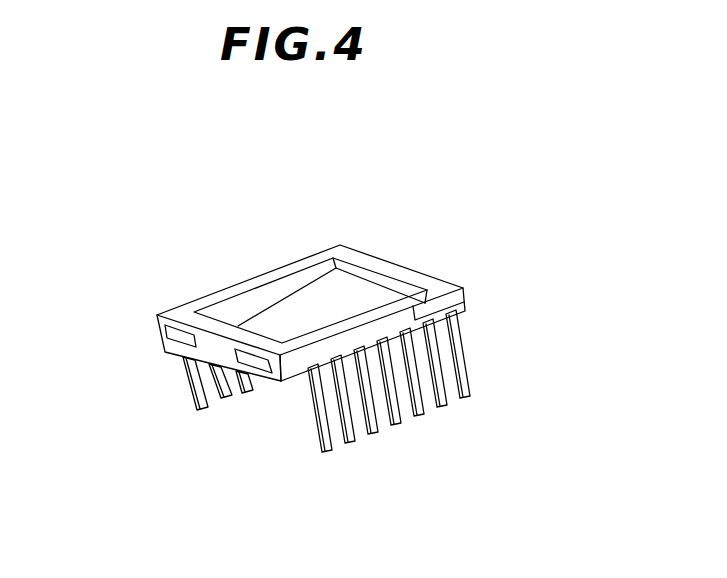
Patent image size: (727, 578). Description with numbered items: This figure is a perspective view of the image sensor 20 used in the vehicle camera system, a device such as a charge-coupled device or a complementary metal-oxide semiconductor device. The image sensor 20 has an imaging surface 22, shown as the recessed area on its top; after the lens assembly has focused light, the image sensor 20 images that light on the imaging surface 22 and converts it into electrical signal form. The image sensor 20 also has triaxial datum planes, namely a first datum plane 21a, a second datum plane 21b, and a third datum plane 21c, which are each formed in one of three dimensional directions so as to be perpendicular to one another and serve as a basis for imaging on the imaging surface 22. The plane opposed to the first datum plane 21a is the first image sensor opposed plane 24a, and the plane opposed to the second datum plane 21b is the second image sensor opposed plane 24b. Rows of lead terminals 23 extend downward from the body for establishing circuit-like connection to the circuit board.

The image sensor 20 is at (360, 262).
The first datum plane 21a is at (218, 345).
The second datum plane 21b is at (283, 372).
The third datum plane 21c is at (176, 317).
The imaging surface 22 is at (352, 302).
The lead terminals 23 is at (193, 395).
The first image sensor opposed plane 24a is at (428, 273).
The second image sensor opposed plane 24b is at (262, 290).